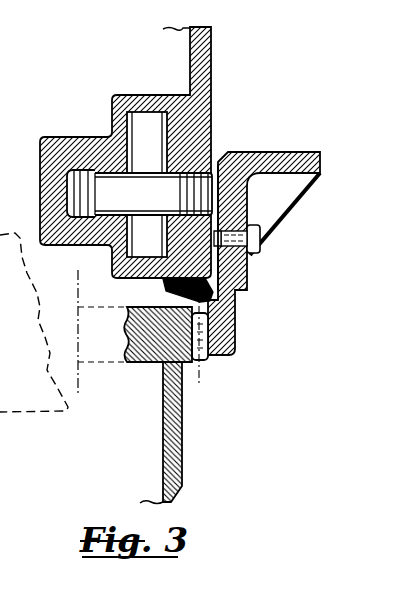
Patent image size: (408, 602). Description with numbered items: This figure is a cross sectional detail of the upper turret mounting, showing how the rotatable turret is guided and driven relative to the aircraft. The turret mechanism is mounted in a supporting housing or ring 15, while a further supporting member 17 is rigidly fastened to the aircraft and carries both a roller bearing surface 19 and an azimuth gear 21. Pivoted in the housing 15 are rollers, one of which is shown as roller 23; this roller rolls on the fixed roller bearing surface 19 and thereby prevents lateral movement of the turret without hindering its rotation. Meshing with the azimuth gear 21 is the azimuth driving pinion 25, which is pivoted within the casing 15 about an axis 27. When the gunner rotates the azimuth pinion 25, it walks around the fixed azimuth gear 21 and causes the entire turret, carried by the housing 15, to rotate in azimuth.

The supporting housing 15 is at (212, 84).
The supporting member 17 is at (247, 152).
The roller bearing surface 19 is at (218, 189).
The azimuth gear 21 is at (235, 358).
The roller 23 is at (89, 166).
The azimuth driving pinion 25 is at (147, 363).
The axis 27 is at (78, 318).